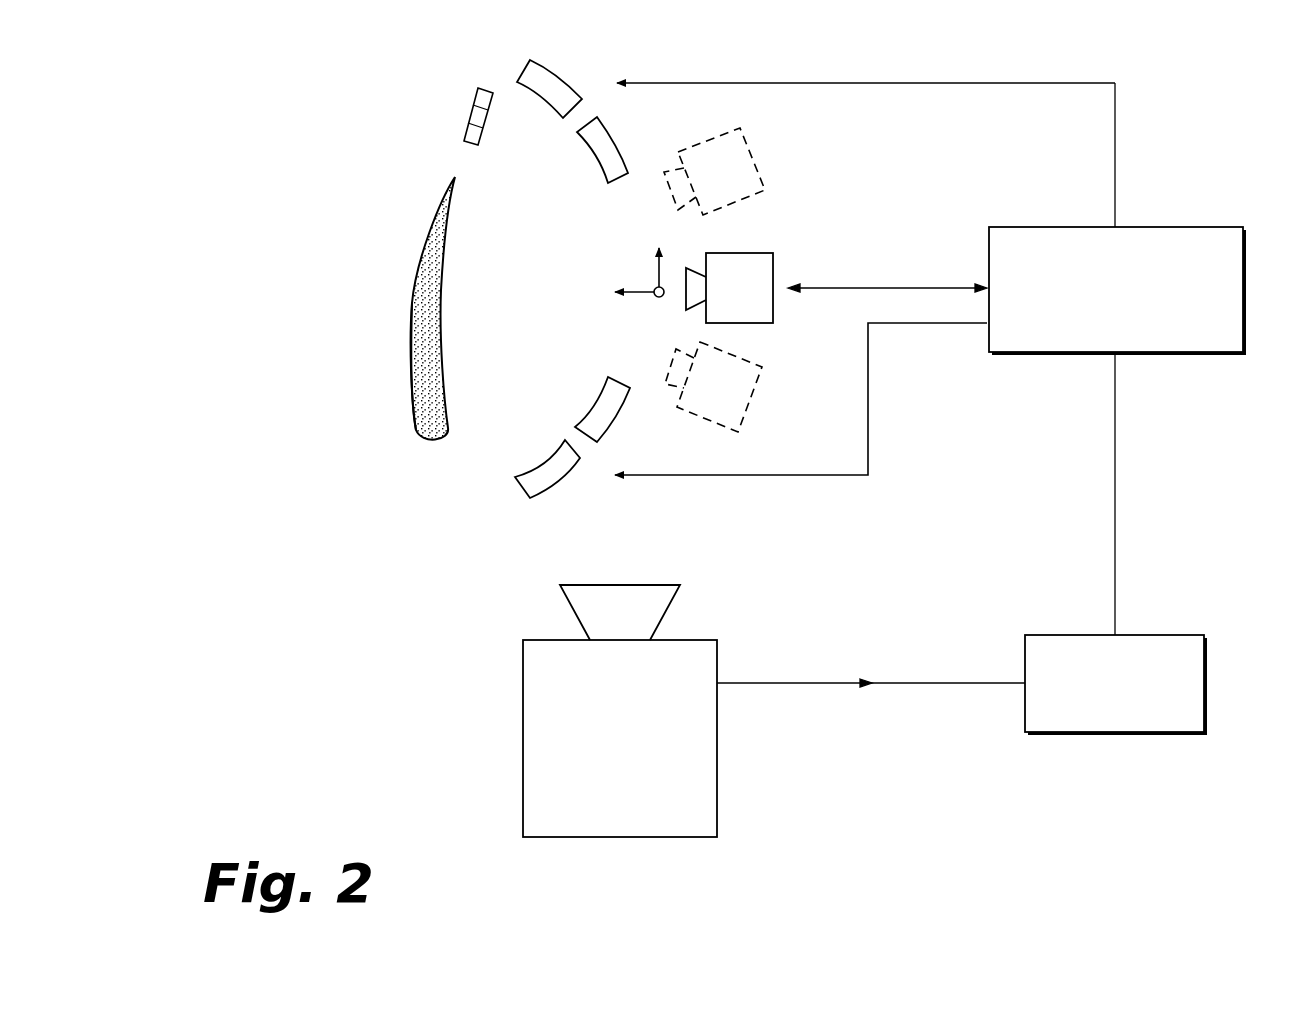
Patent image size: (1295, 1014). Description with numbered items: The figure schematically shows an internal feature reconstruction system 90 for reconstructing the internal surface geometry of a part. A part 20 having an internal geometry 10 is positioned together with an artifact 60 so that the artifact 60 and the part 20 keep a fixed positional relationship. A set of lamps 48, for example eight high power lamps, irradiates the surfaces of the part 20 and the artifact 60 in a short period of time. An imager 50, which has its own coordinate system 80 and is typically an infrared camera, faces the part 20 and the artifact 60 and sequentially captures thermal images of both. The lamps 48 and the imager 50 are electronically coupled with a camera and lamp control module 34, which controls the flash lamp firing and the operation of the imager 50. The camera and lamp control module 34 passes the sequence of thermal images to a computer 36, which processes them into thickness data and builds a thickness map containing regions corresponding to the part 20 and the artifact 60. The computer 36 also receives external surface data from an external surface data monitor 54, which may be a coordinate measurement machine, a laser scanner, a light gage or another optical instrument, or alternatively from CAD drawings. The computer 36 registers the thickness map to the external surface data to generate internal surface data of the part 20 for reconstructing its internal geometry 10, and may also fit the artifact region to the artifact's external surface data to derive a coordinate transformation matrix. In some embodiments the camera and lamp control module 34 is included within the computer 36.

The internal geometry 10 is at (423, 392).
The part 20 is at (405, 293).
The camera and lamp control module 34 is at (1132, 340).
The computer 36 is at (1133, 714).
The lamps 48 is at (584, 84).
The imager 50 is at (751, 298).
The external surface data monitor 54 is at (602, 815).
The artifact 60 is at (473, 93).
The coordinate system 80 is at (617, 270).
The internal feature reconstruction system 90 is at (793, 890).